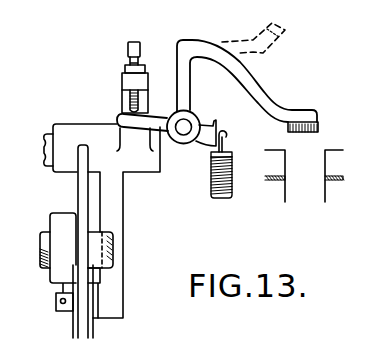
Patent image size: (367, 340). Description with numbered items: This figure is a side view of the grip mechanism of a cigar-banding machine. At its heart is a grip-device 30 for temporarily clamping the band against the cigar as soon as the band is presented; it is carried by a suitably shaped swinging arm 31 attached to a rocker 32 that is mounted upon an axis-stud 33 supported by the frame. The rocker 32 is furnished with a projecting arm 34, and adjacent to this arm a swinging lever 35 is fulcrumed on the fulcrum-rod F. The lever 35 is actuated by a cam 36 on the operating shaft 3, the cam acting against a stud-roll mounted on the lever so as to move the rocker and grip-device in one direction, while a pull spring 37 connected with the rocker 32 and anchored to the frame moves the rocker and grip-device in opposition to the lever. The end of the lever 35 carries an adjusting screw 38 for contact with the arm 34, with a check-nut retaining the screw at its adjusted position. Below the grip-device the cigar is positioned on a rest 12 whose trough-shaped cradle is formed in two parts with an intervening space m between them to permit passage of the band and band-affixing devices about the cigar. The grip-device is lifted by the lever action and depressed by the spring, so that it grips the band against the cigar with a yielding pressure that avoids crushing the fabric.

The operating shaft 3 is at (44, 250).
The rest 12 is at (328, 181).
The grip-device 30 is at (286, 31).
The swinging arm 31 is at (247, 81).
The rocker 32 is at (183, 150).
The axis-stud 33 is at (181, 129).
The projecting arm 34 is at (122, 120).
The swinging lever 35 is at (134, 85).
The cam 36 is at (84, 192).
The pull spring 37 is at (223, 190).
The adjusting screw 38 is at (134, 42).
The fulcrum-rod F is at (44, 150).
The intervening space m is at (288, 176).